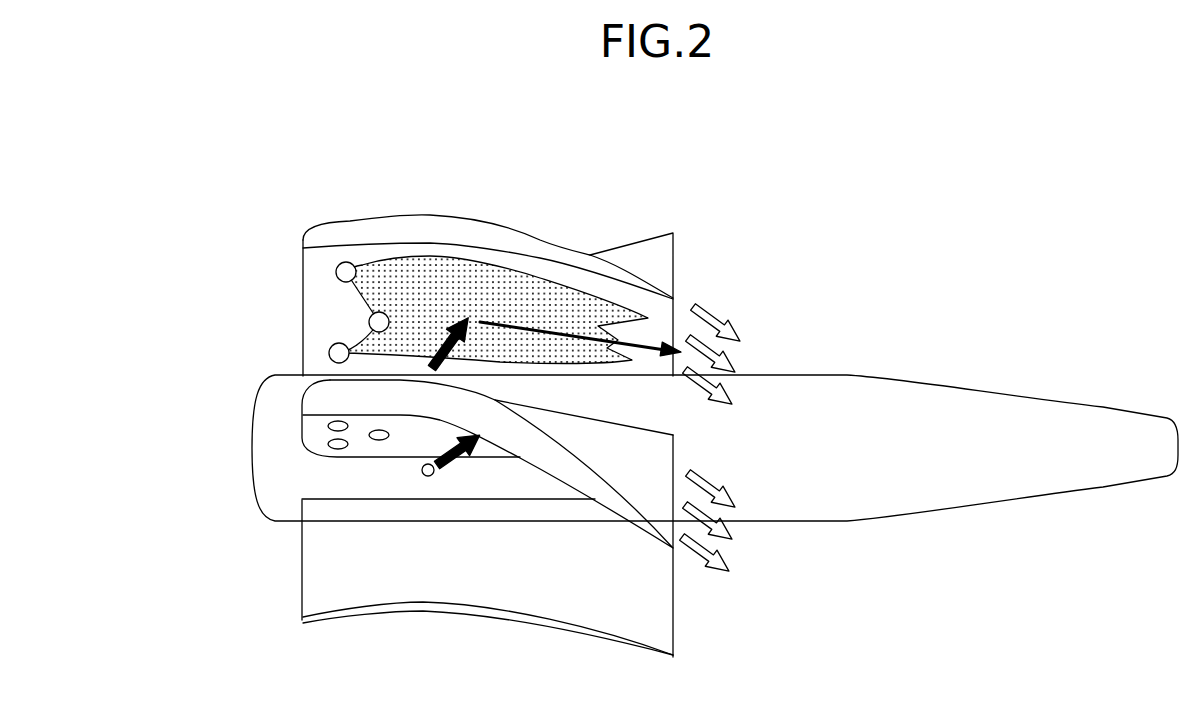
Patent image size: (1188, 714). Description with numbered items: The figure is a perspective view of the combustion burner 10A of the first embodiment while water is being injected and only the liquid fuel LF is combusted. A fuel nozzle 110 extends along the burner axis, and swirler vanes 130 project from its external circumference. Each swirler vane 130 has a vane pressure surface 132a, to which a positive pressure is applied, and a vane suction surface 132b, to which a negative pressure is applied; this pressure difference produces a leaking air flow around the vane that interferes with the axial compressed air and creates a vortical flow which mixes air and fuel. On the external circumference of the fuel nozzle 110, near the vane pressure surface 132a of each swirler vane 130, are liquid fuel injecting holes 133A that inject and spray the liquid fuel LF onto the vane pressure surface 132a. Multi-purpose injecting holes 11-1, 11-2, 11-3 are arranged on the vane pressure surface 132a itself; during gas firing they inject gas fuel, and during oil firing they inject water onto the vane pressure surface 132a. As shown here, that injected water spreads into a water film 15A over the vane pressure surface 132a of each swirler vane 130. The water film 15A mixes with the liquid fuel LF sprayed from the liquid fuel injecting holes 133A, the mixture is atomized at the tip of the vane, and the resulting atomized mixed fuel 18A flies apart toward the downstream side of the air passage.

The combustion burner 10A is at (647, 172).
The fuel nozzle 110 is at (1048, 420).
The swirler vane 130 is at (567, 253).
The vane pressure surface 132a is at (490, 448).
The vane suction surface 132b is at (648, 452).
The liquid fuel injecting hole 133A is at (422, 471).
The water film 15A is at (437, 270).
The atomized mixed fuel 18A is at (717, 312).
The multi-purpose injecting hole 11-1 is at (336, 268).
The multi-purpose injecting hole 11-2 is at (369, 319).
The multi-purpose injecting hole 11-3 is at (329, 353).
The liquid fuel LF is at (467, 448).